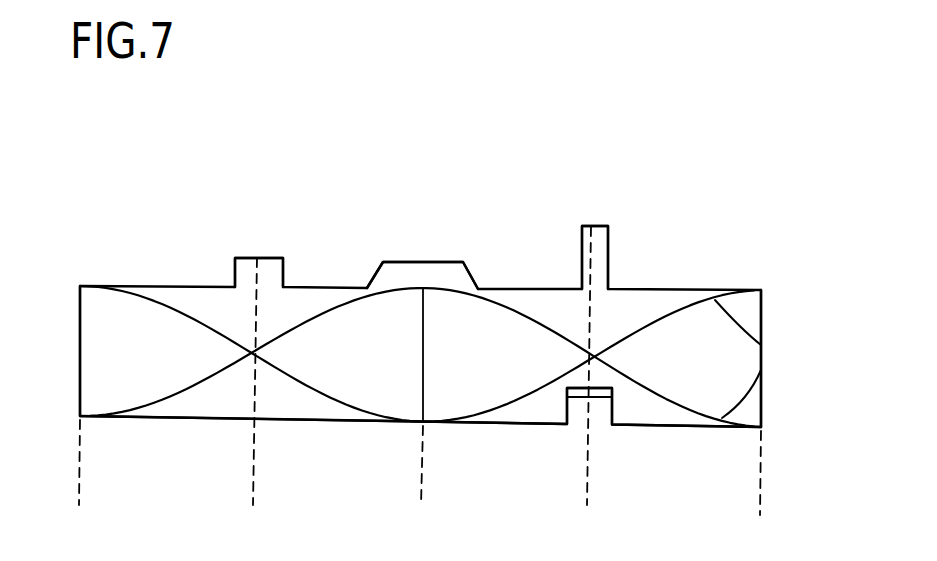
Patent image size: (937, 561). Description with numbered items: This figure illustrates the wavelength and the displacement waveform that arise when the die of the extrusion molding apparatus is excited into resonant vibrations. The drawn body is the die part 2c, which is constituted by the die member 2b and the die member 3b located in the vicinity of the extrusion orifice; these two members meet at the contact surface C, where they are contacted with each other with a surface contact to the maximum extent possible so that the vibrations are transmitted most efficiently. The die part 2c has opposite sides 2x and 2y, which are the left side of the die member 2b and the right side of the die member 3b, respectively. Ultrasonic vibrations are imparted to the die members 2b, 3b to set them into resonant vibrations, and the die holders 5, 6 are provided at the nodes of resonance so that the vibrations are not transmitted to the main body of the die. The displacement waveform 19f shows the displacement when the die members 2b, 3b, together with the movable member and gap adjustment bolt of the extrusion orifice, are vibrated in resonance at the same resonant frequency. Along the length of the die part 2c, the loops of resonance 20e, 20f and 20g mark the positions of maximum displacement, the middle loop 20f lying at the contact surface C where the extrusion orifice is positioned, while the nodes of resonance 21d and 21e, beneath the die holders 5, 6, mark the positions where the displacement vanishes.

The die part 2c is at (337, 246).
The die holder 5 is at (258, 257).
The contact surface C is at (425, 288).
The die holder 6 is at (593, 228).
The displacement waveform 19f is at (761, 341).
The left side of die part 2x is at (80, 386).
The right side of die part 2y is at (761, 410).
The die member 2b is at (244, 413).
The die member 3b is at (526, 416).
The loop of resonance 20e is at (81, 477).
The node of resonance 21d is at (251, 396).
The loop of resonance 20f is at (421, 483).
The node of resonance 21e is at (591, 383).
The loop of resonance 20g is at (766, 488).